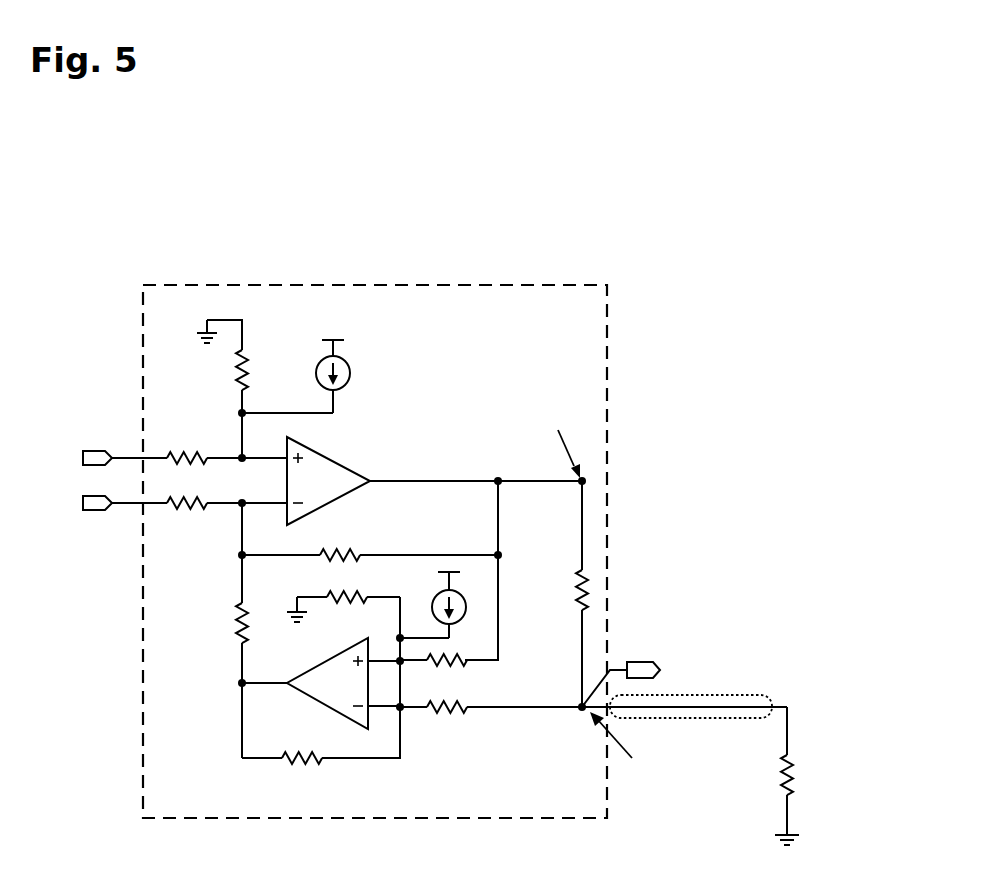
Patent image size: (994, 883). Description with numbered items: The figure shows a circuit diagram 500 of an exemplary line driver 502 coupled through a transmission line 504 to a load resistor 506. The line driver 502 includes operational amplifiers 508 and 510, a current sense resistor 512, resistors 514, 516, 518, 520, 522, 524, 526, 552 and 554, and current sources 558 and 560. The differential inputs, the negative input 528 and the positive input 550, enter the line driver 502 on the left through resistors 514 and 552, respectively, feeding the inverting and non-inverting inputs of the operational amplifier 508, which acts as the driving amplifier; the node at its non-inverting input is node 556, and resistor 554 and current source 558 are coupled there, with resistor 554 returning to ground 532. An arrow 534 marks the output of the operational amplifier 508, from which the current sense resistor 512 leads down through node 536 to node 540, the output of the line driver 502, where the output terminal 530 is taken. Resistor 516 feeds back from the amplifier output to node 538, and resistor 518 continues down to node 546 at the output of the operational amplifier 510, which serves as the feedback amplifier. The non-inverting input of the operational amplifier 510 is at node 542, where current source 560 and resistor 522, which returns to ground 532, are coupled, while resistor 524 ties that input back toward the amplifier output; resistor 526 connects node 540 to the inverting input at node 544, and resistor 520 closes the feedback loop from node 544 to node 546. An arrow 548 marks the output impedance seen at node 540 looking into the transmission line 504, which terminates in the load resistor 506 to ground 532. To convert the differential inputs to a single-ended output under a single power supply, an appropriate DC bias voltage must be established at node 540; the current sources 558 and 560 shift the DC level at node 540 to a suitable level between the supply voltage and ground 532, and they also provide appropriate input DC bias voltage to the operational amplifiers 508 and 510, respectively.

The amplifier circuit 500 is at (750, 113).
The line driver 502 is at (356, 287).
The transmission line 504 is at (720, 718).
The load resistor 506 is at (782, 772).
The operational amplifier 508 is at (349, 469).
The operational amplifier 510 is at (340, 659).
The current sense resistor 512 is at (577, 585).
The resistor 514 is at (182, 511).
The resistor 516 is at (355, 548).
The resistor 518 is at (236, 618).
The resistor 520 is at (297, 764).
The resistor 522 is at (340, 596).
The resistor 524 is at (453, 668).
The resistor 526 is at (453, 712).
The VIN 528 is at (82, 499).
The VOUT 530 is at (660, 673).
The ground 532 is at (203, 333).
The arrow 534 is at (561, 456).
The node 536 is at (580, 494).
The node 538 is at (236, 561).
The node 540 is at (579, 704).
The node 542 is at (402, 668).
The node 544 is at (402, 712).
The node 546 is at (236, 683).
The arrow 548 is at (624, 730).
The VIP 550 is at (82, 454).
The resistor 552 is at (182, 466).
The resistor 554 is at (249, 358).
The node 556 is at (237, 414).
The current source 558 is at (351, 373).
The current source 560 is at (434, 602).